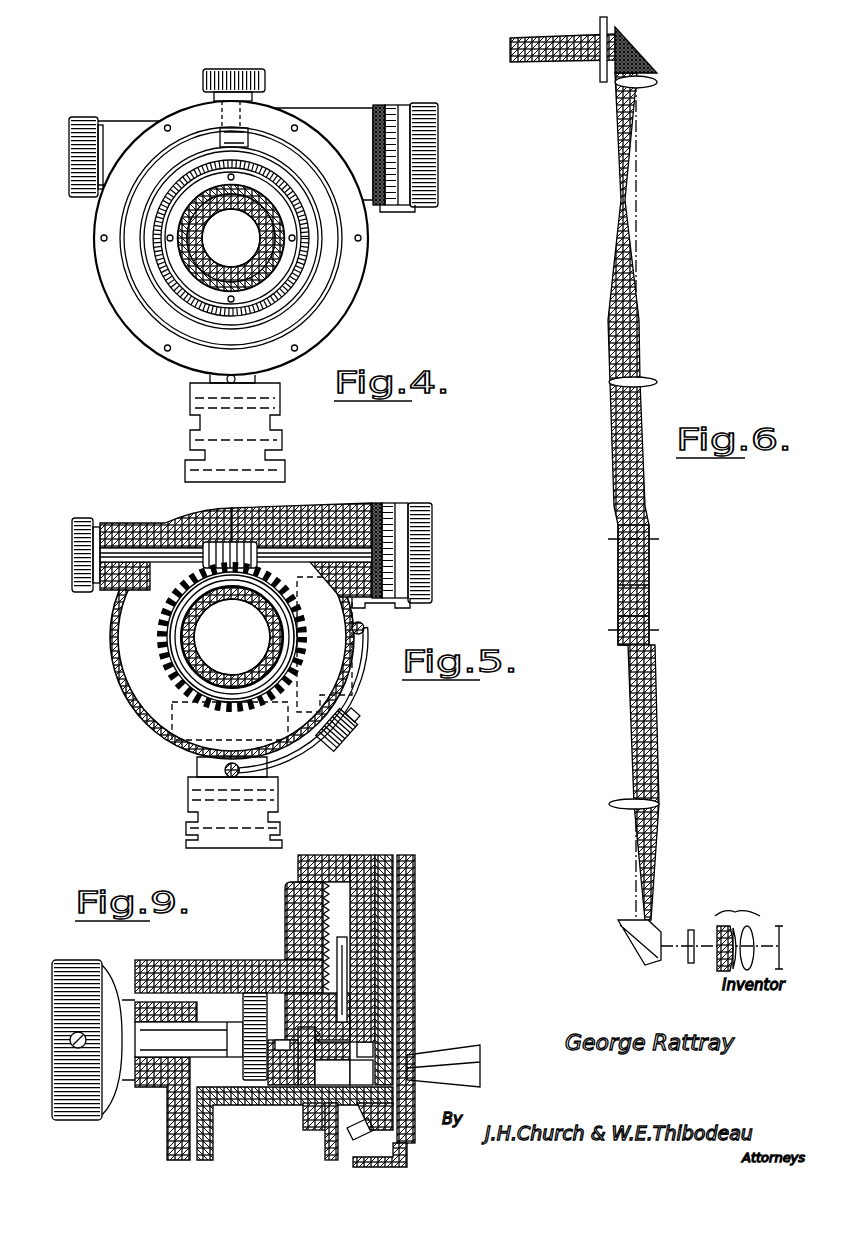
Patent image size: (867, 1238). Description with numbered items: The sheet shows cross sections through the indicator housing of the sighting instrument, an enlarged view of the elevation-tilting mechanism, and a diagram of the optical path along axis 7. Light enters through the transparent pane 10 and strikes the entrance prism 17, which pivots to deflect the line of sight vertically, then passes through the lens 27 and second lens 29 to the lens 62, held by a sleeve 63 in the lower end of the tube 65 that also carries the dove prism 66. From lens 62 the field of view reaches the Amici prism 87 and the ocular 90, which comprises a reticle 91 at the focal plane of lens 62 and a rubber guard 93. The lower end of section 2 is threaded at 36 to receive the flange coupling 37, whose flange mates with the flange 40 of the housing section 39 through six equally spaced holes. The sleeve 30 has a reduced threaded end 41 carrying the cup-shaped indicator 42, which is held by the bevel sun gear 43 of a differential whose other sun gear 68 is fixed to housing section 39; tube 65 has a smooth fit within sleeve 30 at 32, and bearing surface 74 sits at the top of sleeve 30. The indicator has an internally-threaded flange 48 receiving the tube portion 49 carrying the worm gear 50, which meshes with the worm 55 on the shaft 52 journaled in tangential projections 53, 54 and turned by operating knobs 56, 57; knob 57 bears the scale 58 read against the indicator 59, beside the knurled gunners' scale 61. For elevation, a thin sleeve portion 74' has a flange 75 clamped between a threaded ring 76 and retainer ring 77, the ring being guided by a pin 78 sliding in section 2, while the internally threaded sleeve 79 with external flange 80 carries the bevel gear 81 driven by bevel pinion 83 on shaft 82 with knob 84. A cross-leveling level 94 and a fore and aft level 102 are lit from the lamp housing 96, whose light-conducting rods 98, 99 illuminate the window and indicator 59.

In FIG. 9, the section 2 is at (298, 864).
In FIG. 4, the axis 7 is at (234, 248).
In FIG. 5, the axis 7 is at (232, 650).
In FIG. 6, the axis 7 is at (638, 283).
In FIG. 6, the transparent pane 10 is at (600, 70).
In FIG. 6, the entrance prism 17 is at (650, 60).
In FIG. 6, the lens 27 is at (650, 86).
In FIG. 6, the second lens 29 is at (657, 383).
In FIG. 4, the sleeve 30 is at (246, 290).
In FIG. 9, the sleeve 30 is at (383, 857).
In FIG. 4, the bearing portion 32 is at (212, 200).
In FIG. 9, the threaded end 36 is at (322, 906).
In FIG. 9, the flange coupling 37 is at (160, 965).
In FIG. 5, the housing section 39 is at (132, 713).
In FIG. 9, the housing section 39 is at (167, 1142).
In FIG. 4, the flange 40 is at (349, 297).
In FIG. 9, the threaded end 41 is at (395, 1112).
In FIG. 9, the cup-shaped indicator 42 is at (213, 1134).
In FIG. 9, the bevel sun gear 43 is at (346, 1133).
In FIG. 9, the internally-threaded flange 48 is at (305, 1118).
In FIG. 5, the tube portion 49 is at (168, 670).
In FIG. 9, the tube portion 49 is at (327, 1155).
In FIG. 5, the worm gear 50 is at (162, 640).
In FIG. 5, the shaft 52 is at (171, 558).
In FIG. 4, the tangential projection 53 is at (118, 128).
In FIG. 5, the tangential projection 53 is at (124, 527).
In FIG. 4, the tangential projection 54 is at (326, 113).
In FIG. 5, the tangential projection 54 is at (318, 511).
In FIG. 5, the worm 55 is at (232, 541).
In FIG. 4, the operating knob 56 is at (69, 154).
In FIG. 5, the operating knob 56 is at (72, 552).
In FIG. 4, the operating knob 57 is at (438, 190).
In FIG. 5, the operating knob 57 is at (432, 538).
In FIG. 4, the scale 58 is at (395, 105).
In FIG. 5, the scale 58 is at (398, 503).
In FIG. 4, the indicator 59 is at (393, 212).
In FIG. 5, the indicator 59 is at (388, 608).
In FIG. 4, the gunners' scale 61 is at (380, 105).
In FIG. 5, the gunners' scale 61 is at (377, 503).
In FIG. 9, the lens 62 is at (449, 1055).
In FIG. 6, the lens 62 is at (622, 810).
In FIG. 9, the sleeve 63 is at (412, 1141).
In FIG. 4, the tube 65 is at (212, 252).
In FIG. 9, the tube 65 is at (415, 992).
In FIG. 6, the dove prism 66 is at (649, 548).
In FIG. 5, the sun gear 68 is at (196, 661).
In FIG. 4, the bearing surface 74 is at (231, 250).
In FIG. 9, the sleeve portion 74' is at (364, 933).
In FIG. 9, the flange 75 is at (372, 1031).
In FIG. 4, the threaded ring 76 is at (165, 262).
In FIG. 9, the threaded ring 76 is at (332, 1063).
In FIG. 9, the retainer ring 77 is at (361, 1063).
In FIG. 4, the pin 78 is at (167, 237).
In FIG. 9, the pin 78 is at (340, 970).
In FIG. 4, the internally threaded sleeve 79 is at (224, 298).
In FIG. 9, the internally threaded sleeve 79 is at (299, 1073).
In FIG. 9, the external flange 80 is at (283, 1060).
In FIG. 4, the bevel gear 81 is at (289, 183).
In FIG. 9, the bevel gear 81 is at (249, 1000).
In FIG. 9, the shaft 82 is at (160, 1046).
In FIG. 4, the bevel pinion 83 is at (242, 140).
In FIG. 9, the bevel pinion 83 is at (243, 1012).
In FIG. 4, the knob 84 is at (233, 69).
In FIG. 9, the knob 84 is at (81, 1120).
In FIG. 6, the Amici prism 87 is at (628, 938).
In FIG. 6, the ocular 90 is at (737, 909).
In FIG. 6, the reticle 91 is at (691, 930).
In FIG. 4, the rubber guard 93 is at (280, 411).
In FIG. 5, the rubber guard 93 is at (188, 821).
In FIG. 5, the cross-leveling bubble tube level 94 is at (180, 742).
In FIG. 5, the lamp housing 96 is at (333, 752).
In FIG. 5, the light-conducting medium 98 is at (285, 758).
In FIG. 5, the light-conducting medium 99 is at (365, 676).
In FIG. 5, the fore and aft level 102 is at (366, 639).